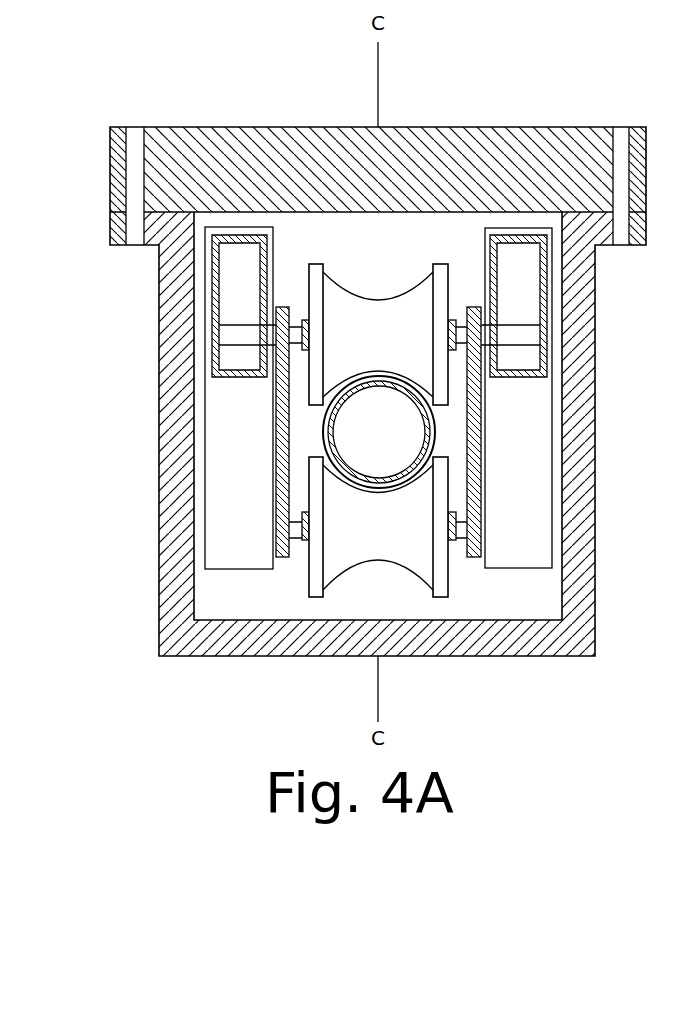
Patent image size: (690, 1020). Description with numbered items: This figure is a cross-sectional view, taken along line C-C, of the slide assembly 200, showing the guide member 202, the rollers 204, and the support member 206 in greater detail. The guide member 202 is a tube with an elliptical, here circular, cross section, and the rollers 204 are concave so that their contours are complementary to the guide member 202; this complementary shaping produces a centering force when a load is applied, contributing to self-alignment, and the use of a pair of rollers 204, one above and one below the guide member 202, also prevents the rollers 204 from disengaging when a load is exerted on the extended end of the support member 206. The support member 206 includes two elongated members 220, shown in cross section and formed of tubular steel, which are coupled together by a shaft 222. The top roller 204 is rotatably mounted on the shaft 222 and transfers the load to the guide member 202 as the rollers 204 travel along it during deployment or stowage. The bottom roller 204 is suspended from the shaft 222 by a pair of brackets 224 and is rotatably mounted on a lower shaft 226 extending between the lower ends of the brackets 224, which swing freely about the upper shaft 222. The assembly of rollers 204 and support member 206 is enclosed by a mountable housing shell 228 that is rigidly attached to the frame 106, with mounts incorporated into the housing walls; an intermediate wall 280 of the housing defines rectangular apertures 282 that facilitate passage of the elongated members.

The frame 106 is at (292, 153).
The slide assembly 200 is at (485, 107).
The guide member 202 is at (325, 432).
The rollers 204 is at (426, 346).
The support member 206 is at (212, 378).
The elongated members 220 is at (265, 282).
The shaft 222 is at (527, 333).
The brackets 224 is at (283, 553).
The lower shaft 226 is at (460, 528).
The housing shell 228 is at (250, 645).
The intermediate wall 280 is at (467, 590).
The rectangular apertures 282 is at (210, 552).